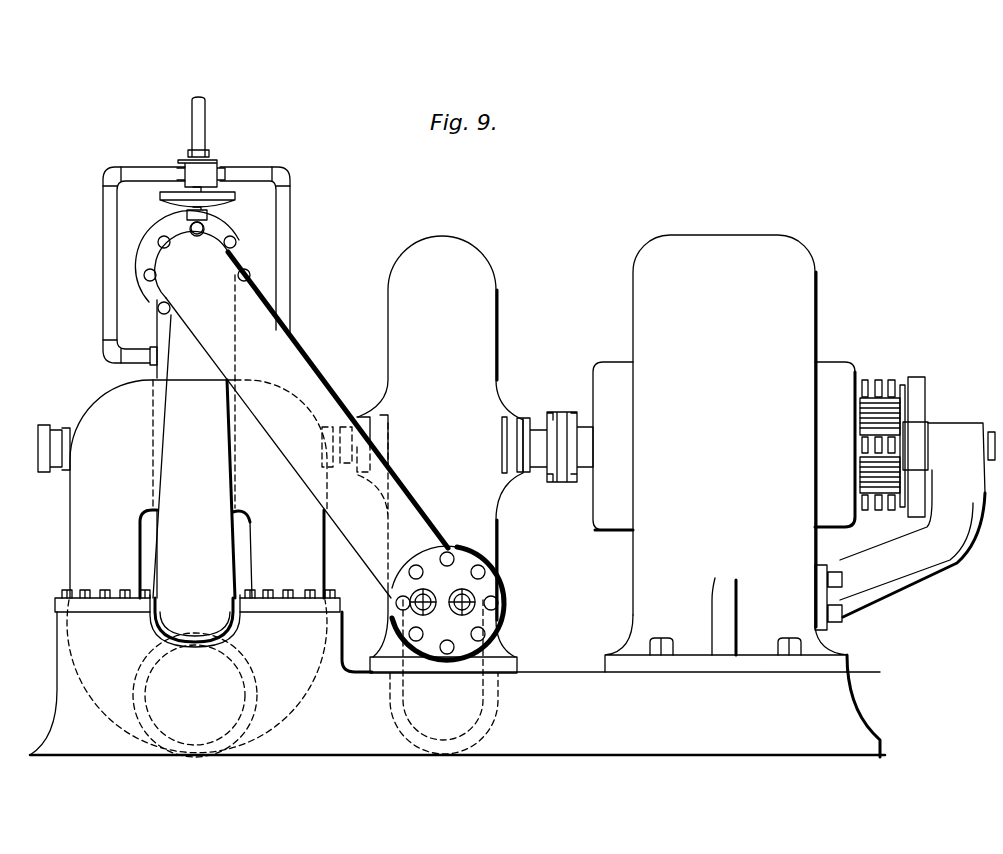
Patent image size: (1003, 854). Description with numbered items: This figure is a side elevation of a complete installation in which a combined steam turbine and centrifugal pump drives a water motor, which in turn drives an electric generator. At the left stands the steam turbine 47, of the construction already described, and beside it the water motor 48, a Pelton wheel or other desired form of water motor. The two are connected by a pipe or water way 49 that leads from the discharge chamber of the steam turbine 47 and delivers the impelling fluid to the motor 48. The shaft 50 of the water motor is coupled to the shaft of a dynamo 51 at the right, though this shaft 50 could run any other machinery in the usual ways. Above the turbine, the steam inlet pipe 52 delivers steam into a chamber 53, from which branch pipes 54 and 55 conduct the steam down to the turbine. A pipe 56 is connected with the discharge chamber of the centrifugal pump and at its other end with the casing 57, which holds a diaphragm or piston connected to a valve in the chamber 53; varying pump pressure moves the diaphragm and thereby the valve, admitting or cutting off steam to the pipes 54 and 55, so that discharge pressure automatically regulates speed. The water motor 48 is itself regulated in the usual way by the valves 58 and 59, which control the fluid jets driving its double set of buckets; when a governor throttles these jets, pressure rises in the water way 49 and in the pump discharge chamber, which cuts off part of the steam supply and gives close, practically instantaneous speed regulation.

The steam turbine 47 is at (201, 516).
The water motor 48 is at (472, 275).
The pipe or water way 49 is at (303, 381).
The shaft 50 is at (540, 470).
The dynamo 51 is at (617, 496).
The steam inlet pipe 52 is at (206, 130).
The chamber 53 is at (205, 170).
The branch pipe 54 is at (108, 218).
The branch pipe 55 is at (289, 237).
The pipe 56 is at (208, 217).
The casing 57 is at (172, 203).
The valve 58 is at (421, 592).
The valve 59 is at (459, 593).